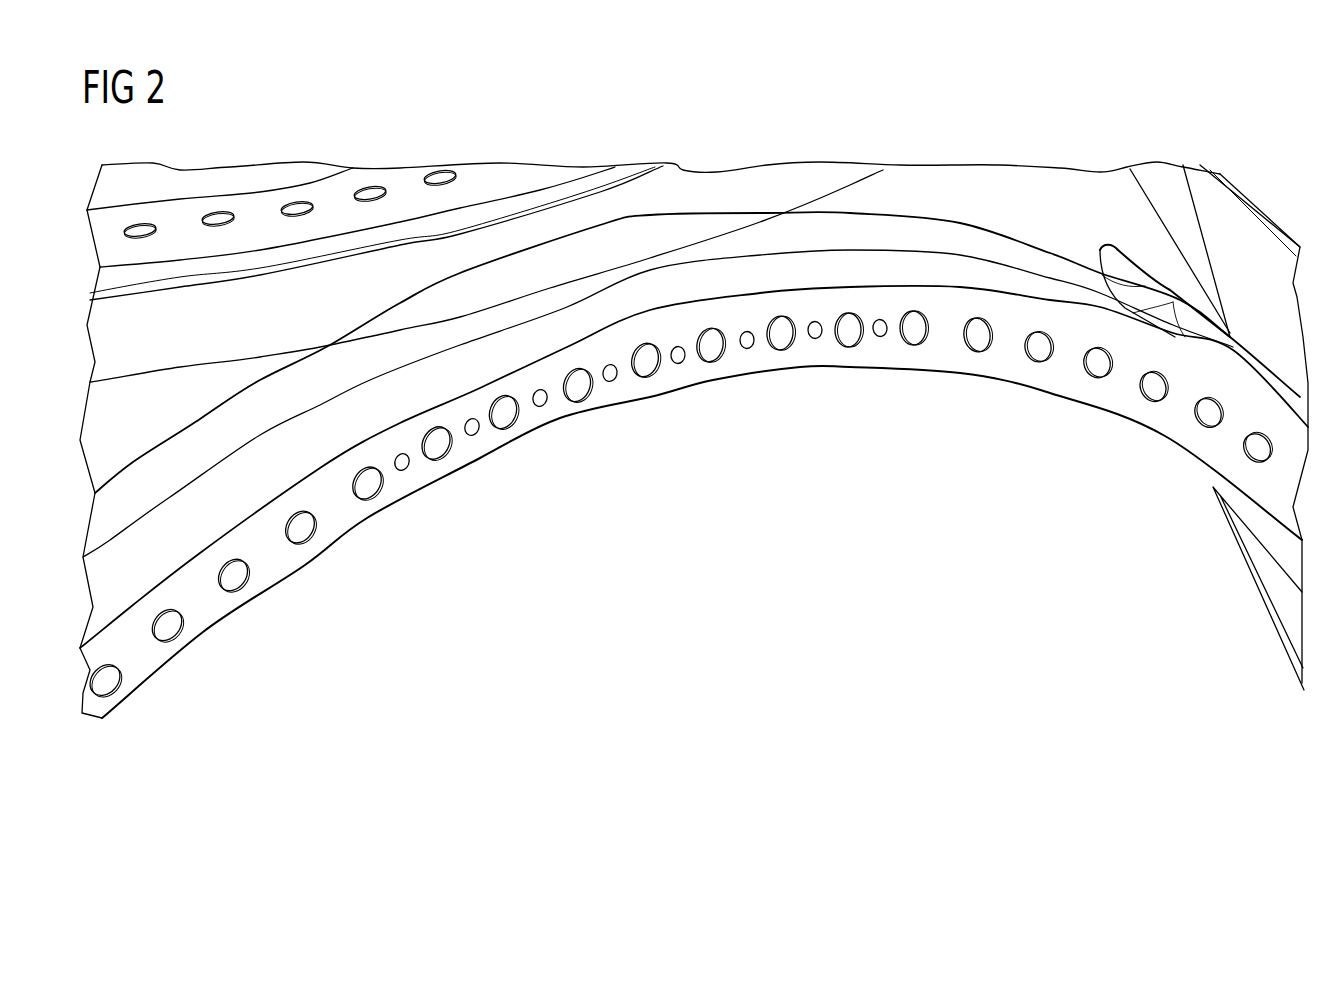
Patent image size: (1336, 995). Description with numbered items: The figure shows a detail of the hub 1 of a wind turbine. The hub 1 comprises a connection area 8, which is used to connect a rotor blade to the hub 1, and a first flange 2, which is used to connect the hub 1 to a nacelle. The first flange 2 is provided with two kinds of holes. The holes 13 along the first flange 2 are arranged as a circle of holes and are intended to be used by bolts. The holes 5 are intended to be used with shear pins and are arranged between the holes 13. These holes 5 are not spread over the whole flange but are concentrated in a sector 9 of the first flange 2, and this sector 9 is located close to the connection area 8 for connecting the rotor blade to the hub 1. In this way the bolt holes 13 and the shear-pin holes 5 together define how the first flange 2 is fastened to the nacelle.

The hub 1 is at (973, 193).
The first flange 2 is at (270, 553).
The holes 5 is at (407, 466).
The connection area 8 is at (398, 184).
The sector 9 is at (643, 451).
The holes 13 is at (1200, 424).